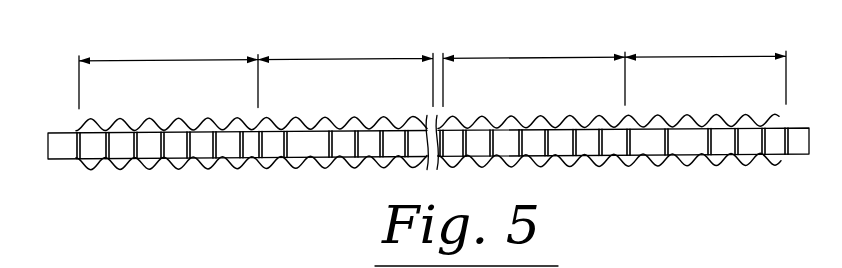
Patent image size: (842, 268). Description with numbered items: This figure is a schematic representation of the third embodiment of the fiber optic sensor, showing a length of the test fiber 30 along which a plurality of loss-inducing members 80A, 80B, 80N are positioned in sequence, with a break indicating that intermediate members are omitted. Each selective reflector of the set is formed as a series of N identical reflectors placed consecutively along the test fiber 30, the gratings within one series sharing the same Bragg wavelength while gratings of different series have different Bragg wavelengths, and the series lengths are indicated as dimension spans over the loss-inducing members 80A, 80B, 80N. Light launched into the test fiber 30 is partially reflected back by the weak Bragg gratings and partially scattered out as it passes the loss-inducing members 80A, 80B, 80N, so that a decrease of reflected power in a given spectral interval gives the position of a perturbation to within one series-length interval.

The test fiber 30 is at (68, 133).
The loss-inducing member 80A is at (171, 60).
The loss-inducing member 80B is at (358, 61).
The loss-inducing member 80N is at (716, 60).